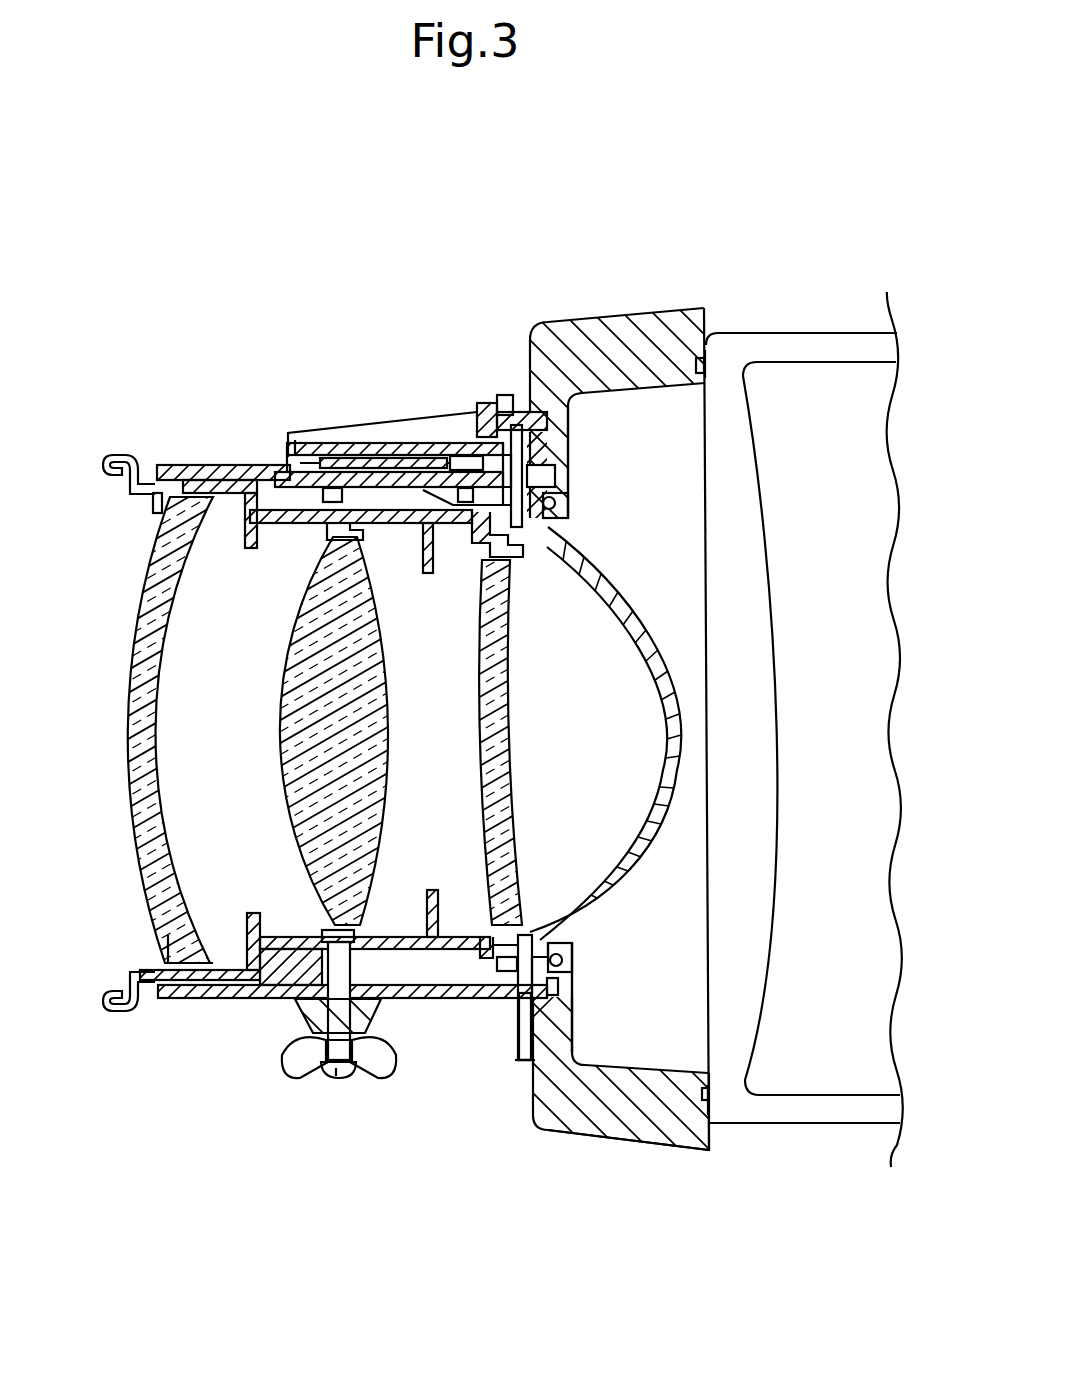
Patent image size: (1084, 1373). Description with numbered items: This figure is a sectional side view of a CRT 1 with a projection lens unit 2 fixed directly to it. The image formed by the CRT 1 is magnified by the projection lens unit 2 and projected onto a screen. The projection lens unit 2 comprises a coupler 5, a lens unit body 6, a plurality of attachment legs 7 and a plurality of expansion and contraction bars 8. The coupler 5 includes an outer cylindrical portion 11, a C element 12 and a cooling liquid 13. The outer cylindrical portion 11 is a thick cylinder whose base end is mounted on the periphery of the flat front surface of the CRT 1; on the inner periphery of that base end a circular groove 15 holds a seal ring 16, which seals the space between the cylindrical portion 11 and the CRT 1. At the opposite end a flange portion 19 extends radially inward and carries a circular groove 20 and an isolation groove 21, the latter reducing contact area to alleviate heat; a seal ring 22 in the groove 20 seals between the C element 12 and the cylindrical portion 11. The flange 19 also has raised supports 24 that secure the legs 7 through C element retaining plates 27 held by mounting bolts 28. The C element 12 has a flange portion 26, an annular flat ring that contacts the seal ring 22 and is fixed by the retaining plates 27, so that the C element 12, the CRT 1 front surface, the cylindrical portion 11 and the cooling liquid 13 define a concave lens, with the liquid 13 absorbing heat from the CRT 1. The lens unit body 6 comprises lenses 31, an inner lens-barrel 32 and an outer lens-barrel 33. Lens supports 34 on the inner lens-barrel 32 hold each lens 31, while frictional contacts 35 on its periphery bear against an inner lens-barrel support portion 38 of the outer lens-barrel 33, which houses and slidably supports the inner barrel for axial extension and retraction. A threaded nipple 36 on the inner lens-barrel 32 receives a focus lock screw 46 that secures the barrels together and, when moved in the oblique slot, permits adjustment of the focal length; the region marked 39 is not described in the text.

The CRT 1 is at (855, 333).
The projection lens unit 2 is at (390, 270).
The coupler 5 is at (617, 310).
The lens unit body 6 is at (250, 462).
The attachment legs 7 is at (420, 412).
The expansion and contraction bars 8 is at (370, 448).
The outer cylindrical portion 11 is at (672, 1150).
The C element 12 is at (655, 835).
The cooling liquid 13 is at (612, 1055).
The circular groove 15 is at (699, 358).
The seal ring 16 is at (705, 365).
The flange portion 19 is at (575, 432).
The circular groove 20 is at (556, 503).
The isolation groove 21 is at (552, 472).
The seal ring 22 is at (562, 522).
The raised supports 24 is at (527, 405).
The flange portion 26 is at (470, 1000).
The C element retaining plates 27 is at (520, 1040).
The mounting bolt 28 is at (480, 400).
The lens 31 is at (125, 735).
The inner lens-barrel 32 is at (265, 982).
The outer lens-barrel 33 is at (200, 465).
The lens supports 34 is at (155, 503).
The frictional contacts 35 is at (150, 462).
The threaded nipple 36 is at (300, 1000).
The inner lens-barrel support portion 38 is at (505, 555).
The flange 39 is at (580, 1040).
The focus lock screw 46 is at (332, 1082).